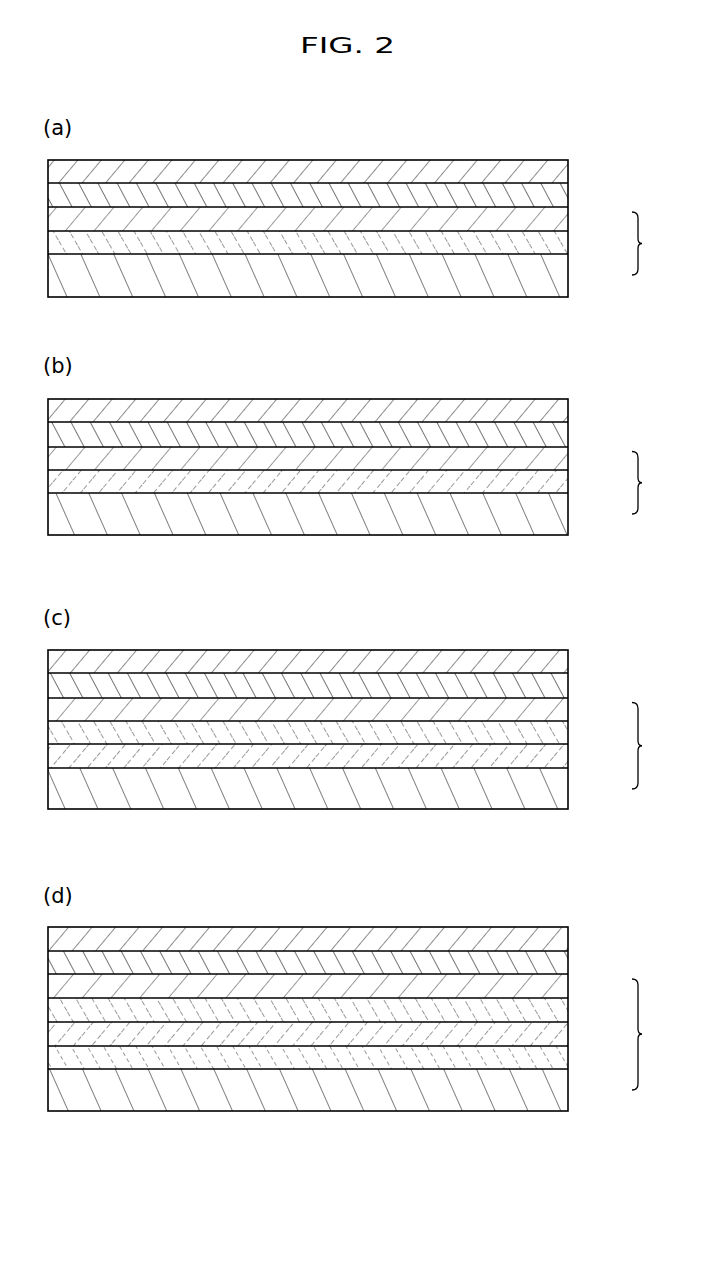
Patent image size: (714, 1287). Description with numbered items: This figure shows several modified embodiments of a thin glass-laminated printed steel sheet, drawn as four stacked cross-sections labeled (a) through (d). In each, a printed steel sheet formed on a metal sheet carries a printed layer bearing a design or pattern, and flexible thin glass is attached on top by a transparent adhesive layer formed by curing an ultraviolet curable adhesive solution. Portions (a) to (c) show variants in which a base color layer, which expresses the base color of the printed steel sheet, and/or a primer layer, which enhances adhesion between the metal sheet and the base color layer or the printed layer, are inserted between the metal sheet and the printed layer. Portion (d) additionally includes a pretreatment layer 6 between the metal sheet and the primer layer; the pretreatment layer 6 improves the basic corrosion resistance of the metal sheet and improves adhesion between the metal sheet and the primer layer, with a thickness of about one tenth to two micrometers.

The pretreatment layer 6 is at (568, 1060).